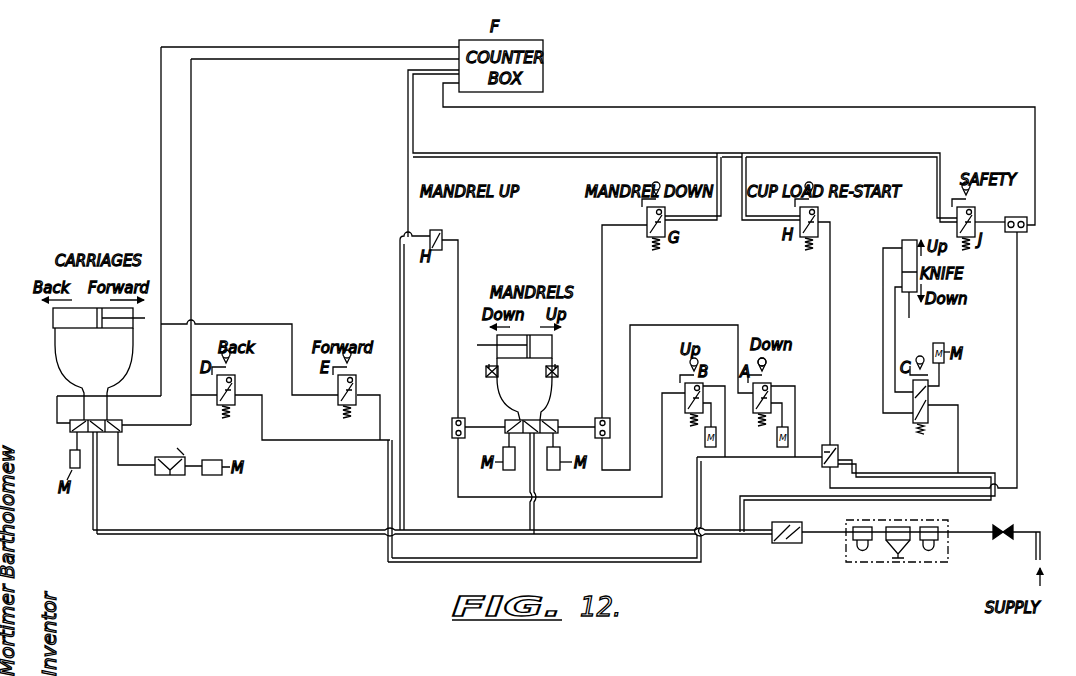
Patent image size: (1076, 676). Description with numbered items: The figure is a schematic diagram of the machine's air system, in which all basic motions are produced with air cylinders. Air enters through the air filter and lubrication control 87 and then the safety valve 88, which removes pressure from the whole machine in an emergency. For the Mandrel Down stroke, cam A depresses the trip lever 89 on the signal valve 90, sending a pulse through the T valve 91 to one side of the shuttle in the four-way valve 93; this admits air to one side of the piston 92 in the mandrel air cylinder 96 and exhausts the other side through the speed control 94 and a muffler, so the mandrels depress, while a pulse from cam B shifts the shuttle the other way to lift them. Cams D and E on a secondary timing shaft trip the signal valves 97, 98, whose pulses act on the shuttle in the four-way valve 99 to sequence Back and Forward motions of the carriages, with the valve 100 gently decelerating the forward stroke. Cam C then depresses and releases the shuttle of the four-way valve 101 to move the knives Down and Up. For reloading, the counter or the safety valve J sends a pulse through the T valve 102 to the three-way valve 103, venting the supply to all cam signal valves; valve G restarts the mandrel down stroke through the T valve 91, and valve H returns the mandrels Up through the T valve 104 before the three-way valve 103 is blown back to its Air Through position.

The air filter and lubrication control 87 is at (868, 566).
The safety valve 88 is at (789, 544).
The trip lever 89 is at (766, 362).
The signal valve 90 is at (775, 387).
The T valve 91 is at (613, 428).
The piston 92 is at (531, 340).
The 4-way valve 93 is at (546, 425).
The speed control 94 is at (491, 378).
The mandrel air cylinder 96 is at (553, 357).
The signal valve 97 is at (240, 387).
The signal valve 98 is at (359, 387).
The 4-way valve 99 is at (124, 418).
The valve 100 is at (165, 472).
The 4-way valve 101 is at (912, 419).
The T valve 102 is at (1017, 216).
The 3-way valve 103 is at (822, 463).
The T valve 104 is at (452, 430).